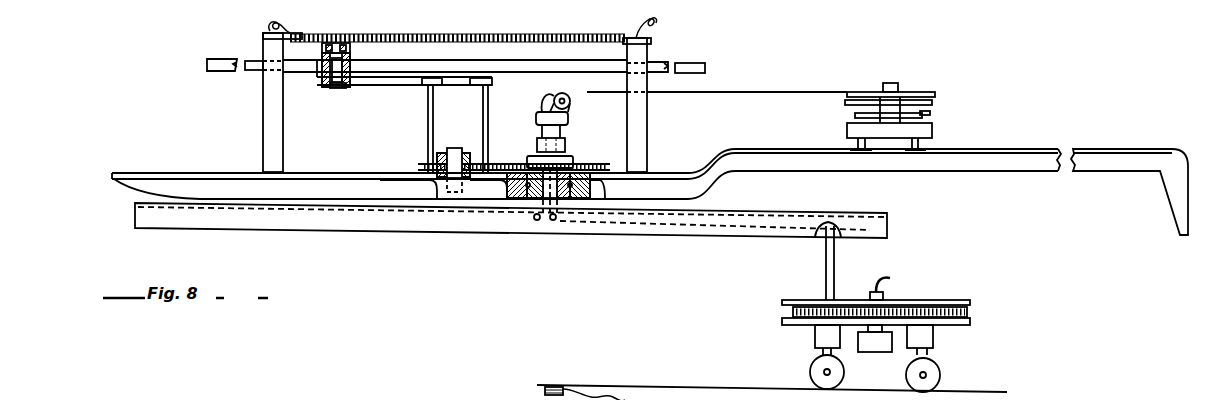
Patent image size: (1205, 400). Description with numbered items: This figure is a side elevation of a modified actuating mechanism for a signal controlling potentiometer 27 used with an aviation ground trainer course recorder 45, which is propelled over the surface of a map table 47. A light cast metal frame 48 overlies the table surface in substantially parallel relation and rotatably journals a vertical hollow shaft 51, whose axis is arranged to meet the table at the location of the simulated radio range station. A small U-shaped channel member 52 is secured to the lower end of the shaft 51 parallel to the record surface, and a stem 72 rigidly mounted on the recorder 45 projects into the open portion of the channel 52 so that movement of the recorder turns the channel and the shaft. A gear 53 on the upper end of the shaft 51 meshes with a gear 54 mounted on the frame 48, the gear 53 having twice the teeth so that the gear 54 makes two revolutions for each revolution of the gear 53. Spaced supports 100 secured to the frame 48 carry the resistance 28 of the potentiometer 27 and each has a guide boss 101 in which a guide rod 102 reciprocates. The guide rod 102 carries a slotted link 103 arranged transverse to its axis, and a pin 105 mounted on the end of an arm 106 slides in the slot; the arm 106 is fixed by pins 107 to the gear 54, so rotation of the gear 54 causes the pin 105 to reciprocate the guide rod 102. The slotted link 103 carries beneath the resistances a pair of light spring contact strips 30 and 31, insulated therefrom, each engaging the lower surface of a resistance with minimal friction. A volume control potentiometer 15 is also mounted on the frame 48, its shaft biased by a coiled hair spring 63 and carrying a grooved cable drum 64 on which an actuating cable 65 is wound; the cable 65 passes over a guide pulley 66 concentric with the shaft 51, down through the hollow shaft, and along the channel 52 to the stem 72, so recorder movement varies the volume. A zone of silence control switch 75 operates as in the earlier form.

The spaced supports 100 is at (265, 132).
The guide boss 101 is at (262, 56).
The guide rod 102 is at (409, 67).
The slotted link 103 is at (342, 87).
The pin 105 is at (323, 88).
The arm 106 is at (395, 87).
The pins 107 is at (437, 84).
The signal controlling potentiometer 27 is at (415, 38).
The resistance 28 is at (292, 31).
The spring contact strip 30 is at (319, 46).
The spring contact strip 31 is at (322, 50).
The guide pulley 66 is at (572, 106).
The actuating cable 65 is at (774, 93).
The vertical hollow shaft 51 is at (566, 157).
The gear 53 is at (586, 170).
The gear 54 is at (420, 166).
The frame 48 is at (1018, 176).
The U-shaped channel member 52 is at (406, 230).
The stem 72 is at (832, 263).
The course recorder 45 is at (968, 324).
The map table 47 is at (672, 386).
The zone of silence control switch 75 is at (550, 387).
The grooved cable drum 64 is at (933, 94).
The coiled hair spring 63 is at (922, 116).
The volume control potentiometer 15 is at (932, 133).